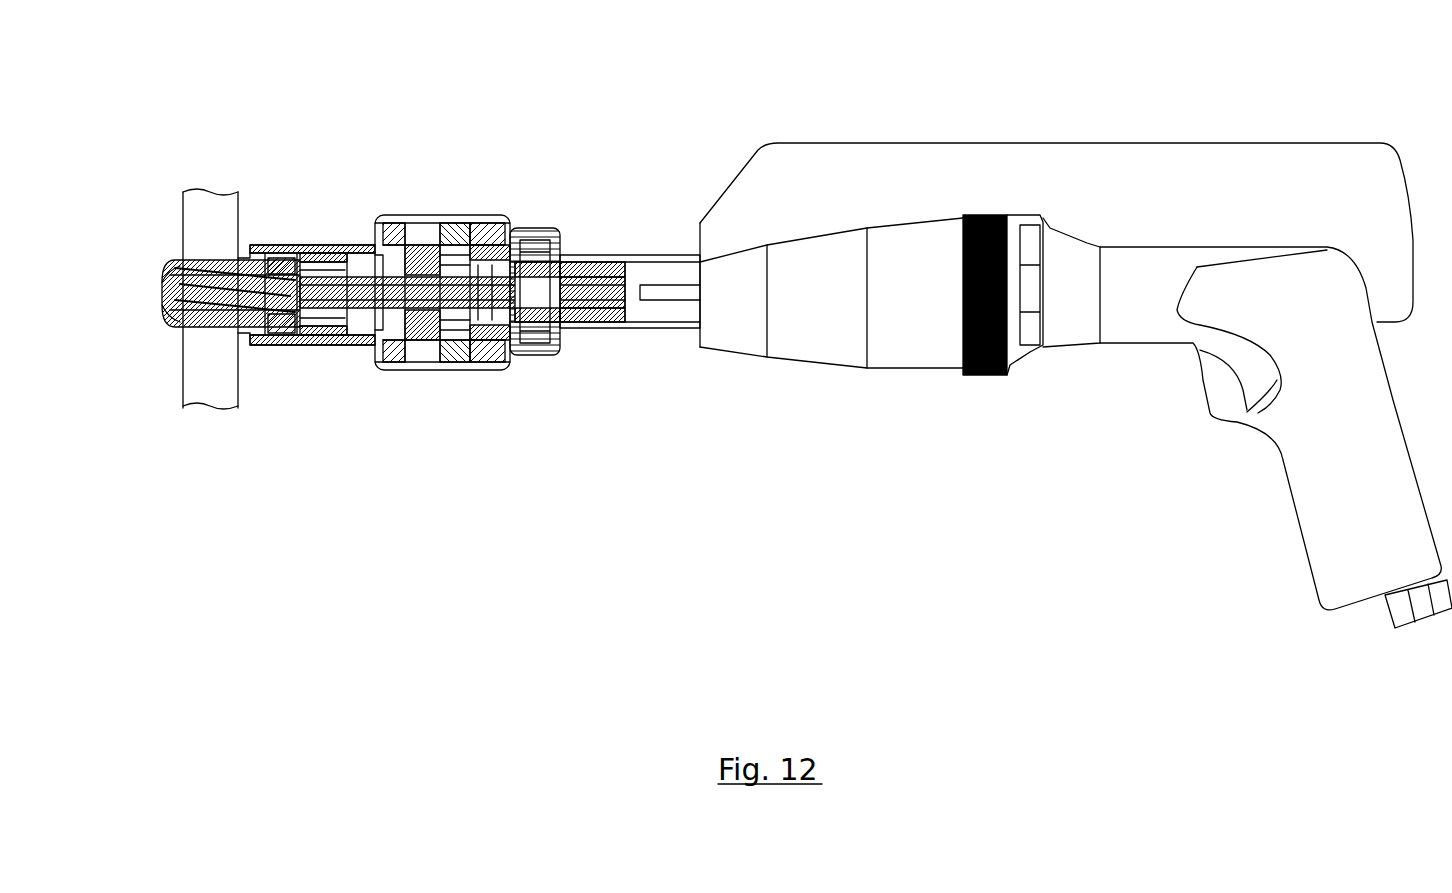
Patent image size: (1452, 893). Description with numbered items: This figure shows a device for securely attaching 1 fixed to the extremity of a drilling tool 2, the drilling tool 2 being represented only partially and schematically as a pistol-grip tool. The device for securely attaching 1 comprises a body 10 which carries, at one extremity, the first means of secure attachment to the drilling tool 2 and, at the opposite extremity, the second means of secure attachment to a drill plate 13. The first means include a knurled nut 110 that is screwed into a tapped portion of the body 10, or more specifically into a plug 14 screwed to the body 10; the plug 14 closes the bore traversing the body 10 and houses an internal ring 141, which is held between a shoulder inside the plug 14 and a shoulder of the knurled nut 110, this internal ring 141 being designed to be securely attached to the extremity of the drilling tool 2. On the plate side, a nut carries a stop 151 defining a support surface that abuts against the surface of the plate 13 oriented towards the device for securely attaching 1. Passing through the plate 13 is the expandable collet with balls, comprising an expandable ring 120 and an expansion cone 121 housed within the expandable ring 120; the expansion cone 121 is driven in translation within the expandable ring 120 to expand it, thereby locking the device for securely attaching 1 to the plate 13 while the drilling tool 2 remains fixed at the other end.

The device for securely attaching 1 is at (447, 160).
The drilling tool 2 is at (1012, 98).
The body 10 is at (386, 218).
The drill plate 13 is at (208, 380).
The plug 14 is at (569, 214).
The knurled nut 110 is at (562, 232).
The expandable ring 120 is at (191, 255).
The expansion cone 121 is at (163, 320).
The internal ring 141 is at (537, 230).
The stop 151 is at (250, 250).